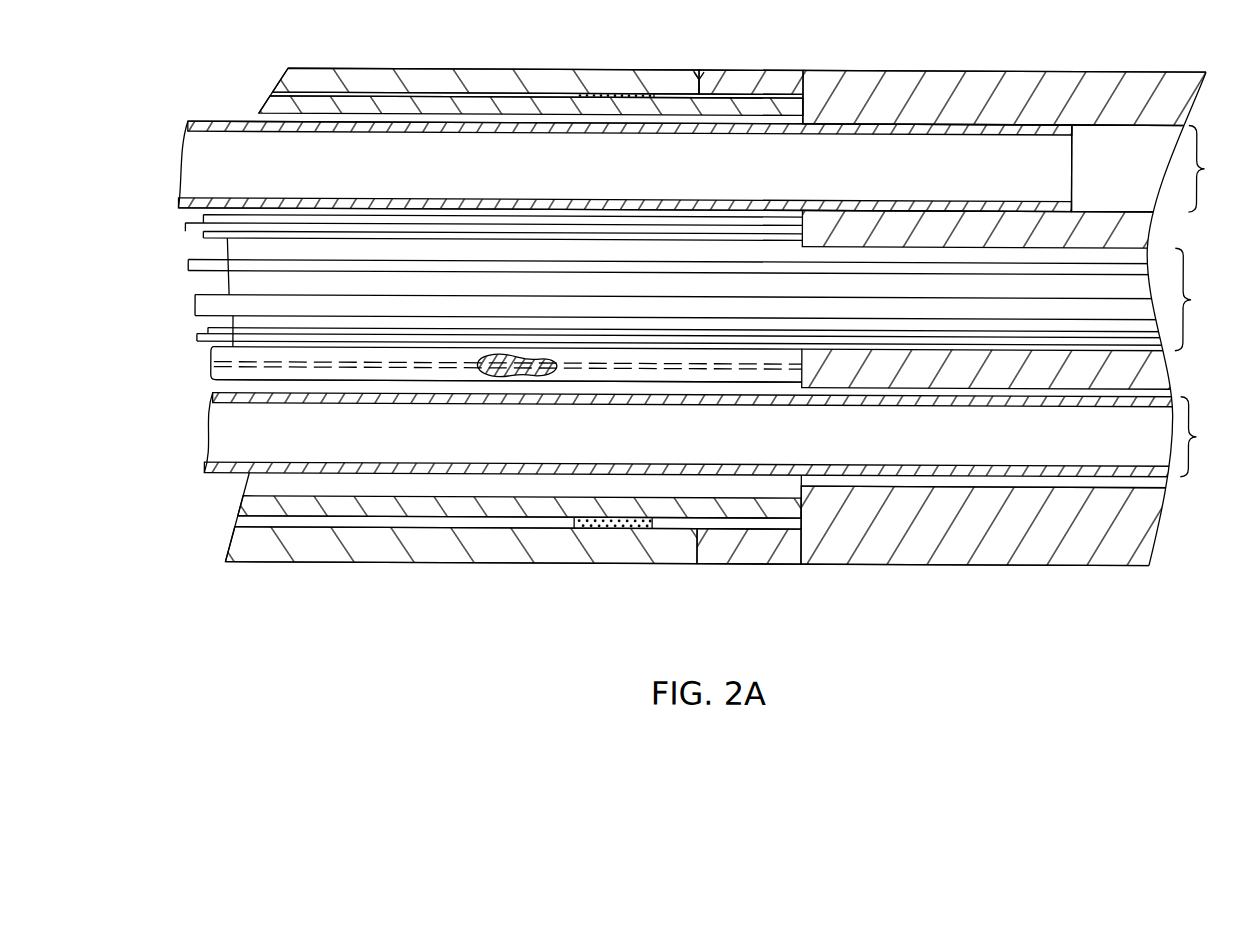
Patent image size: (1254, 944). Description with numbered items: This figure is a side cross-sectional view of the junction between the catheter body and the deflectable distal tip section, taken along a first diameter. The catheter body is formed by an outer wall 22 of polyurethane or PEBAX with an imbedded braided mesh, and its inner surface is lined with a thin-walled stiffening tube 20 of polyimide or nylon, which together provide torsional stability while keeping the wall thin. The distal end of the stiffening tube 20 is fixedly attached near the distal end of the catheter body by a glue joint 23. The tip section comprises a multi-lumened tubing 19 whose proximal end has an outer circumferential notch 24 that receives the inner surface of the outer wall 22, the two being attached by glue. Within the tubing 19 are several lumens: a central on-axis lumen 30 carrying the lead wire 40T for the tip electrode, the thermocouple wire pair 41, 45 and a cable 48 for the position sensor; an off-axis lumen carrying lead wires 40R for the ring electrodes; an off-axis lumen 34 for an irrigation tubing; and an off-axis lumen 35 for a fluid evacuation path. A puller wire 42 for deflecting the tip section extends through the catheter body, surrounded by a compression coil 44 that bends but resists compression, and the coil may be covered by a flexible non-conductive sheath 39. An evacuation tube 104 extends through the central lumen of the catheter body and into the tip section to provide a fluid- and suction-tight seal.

The multi-lumened tubing 19 is at (993, 68).
The stiffening tube 20 is at (378, 94).
The outer wall 22 is at (466, 68).
The glue joint 23 is at (613, 93).
The outer circumferential notch 24 is at (762, 92).
The evacuation tube 104 is at (177, 162).
The off-axis lumen 35 is at (1156, 168).
The lead wires 40R is at (432, 236).
The lead wire 40T is at (188, 266).
The cable 48 is at (195, 303).
The thermocouple wire 41 is at (208, 330).
The thermocouple wire 45 is at (197, 341).
The puller wire 42 is at (210, 362).
The compression coil 44 is at (528, 376).
The non-conductive sheath 39 is at (465, 380).
The central on-axis lumen 30 is at (1013, 299).
The off-axis lumen 34 is at (719, 435).